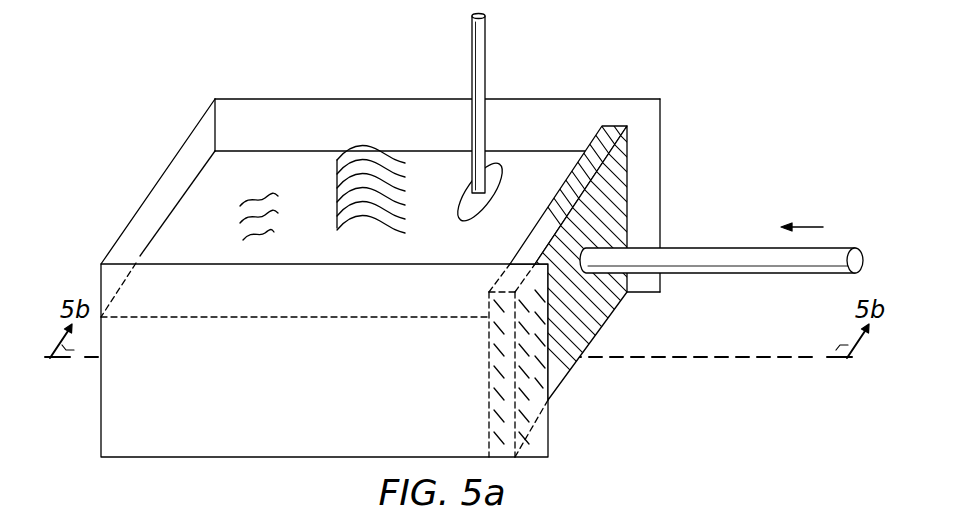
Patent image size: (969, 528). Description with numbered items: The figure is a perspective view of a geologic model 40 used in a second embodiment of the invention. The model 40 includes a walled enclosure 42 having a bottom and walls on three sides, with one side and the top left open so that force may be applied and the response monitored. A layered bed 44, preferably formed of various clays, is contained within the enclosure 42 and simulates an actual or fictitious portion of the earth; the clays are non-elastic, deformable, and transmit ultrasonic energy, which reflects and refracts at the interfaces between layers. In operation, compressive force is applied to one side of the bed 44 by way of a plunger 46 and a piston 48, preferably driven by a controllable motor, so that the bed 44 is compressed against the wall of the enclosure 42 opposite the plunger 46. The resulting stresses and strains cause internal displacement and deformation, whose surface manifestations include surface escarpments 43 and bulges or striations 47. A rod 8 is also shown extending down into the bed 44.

The probe rod 8 is at (474, 56).
The geologic model 40 is at (630, 58).
The walled enclosure 42 is at (270, 97).
The surface escarpments 43 is at (256, 200).
The layered bed 44 is at (283, 419).
The plunger 46 is at (602, 314).
The bulges or striations 47 is at (346, 146).
The piston 48 is at (710, 250).